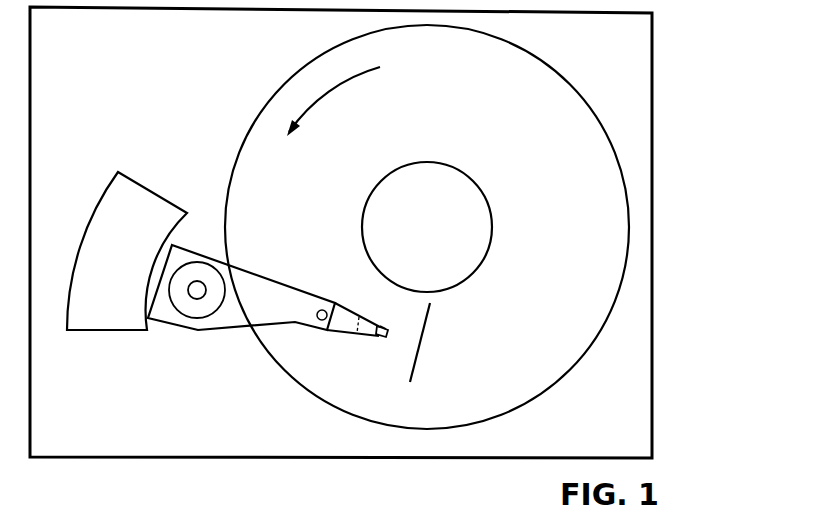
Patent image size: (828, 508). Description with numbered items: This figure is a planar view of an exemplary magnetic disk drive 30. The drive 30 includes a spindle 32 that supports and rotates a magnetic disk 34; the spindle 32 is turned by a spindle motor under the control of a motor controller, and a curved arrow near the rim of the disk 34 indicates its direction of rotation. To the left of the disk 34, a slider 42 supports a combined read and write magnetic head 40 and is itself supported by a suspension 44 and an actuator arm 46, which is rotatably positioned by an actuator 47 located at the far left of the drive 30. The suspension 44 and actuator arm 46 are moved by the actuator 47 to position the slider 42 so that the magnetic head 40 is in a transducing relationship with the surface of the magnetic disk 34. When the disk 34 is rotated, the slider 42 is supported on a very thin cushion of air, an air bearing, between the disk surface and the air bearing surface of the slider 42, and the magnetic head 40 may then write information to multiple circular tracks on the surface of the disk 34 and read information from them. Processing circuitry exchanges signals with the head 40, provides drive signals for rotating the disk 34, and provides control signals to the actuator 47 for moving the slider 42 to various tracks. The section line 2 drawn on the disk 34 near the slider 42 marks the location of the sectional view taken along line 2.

The magnetic disk drive 30 is at (672, 49).
The spindle 32 is at (467, 173).
The magnetic disk 34 is at (573, 249).
The magnetic head 40 is at (385, 337).
The slider 42 is at (383, 324).
The suspension 44 is at (343, 333).
The actuator arm 46 is at (283, 286).
The actuator 47 is at (158, 198).
The section line 2- 2 is at (440, 308).